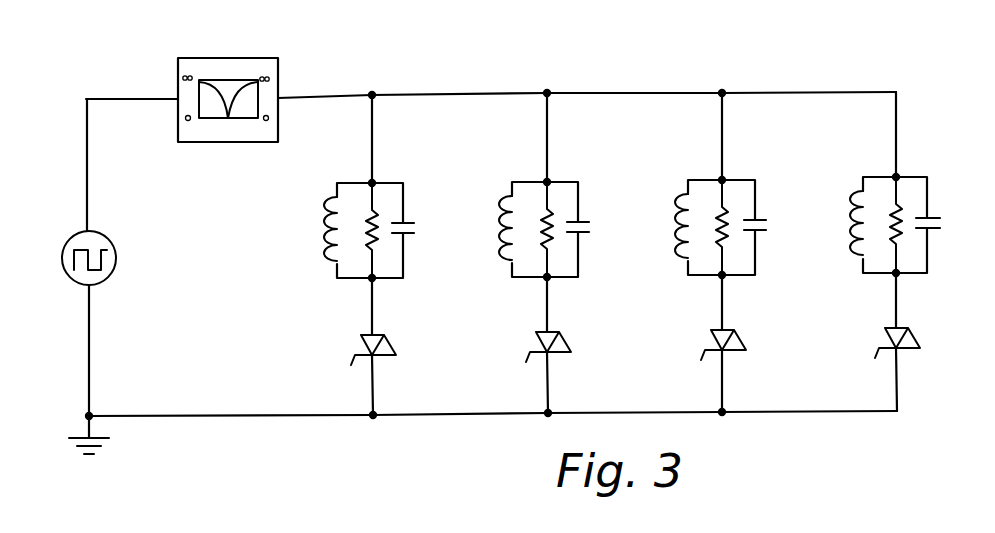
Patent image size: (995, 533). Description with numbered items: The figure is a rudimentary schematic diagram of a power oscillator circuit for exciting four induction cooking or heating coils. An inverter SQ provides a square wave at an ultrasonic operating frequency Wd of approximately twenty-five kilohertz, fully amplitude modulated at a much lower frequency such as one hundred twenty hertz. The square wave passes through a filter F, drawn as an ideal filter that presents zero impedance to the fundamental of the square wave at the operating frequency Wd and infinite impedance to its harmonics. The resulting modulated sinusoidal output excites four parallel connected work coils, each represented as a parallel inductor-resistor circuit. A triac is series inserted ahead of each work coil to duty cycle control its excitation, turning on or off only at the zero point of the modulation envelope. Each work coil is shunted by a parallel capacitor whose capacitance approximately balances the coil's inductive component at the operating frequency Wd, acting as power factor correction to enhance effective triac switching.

The filter F is at (228, 80).
The operating frequency Wd is at (217, 130).
The inverter SQ is at (111, 236).